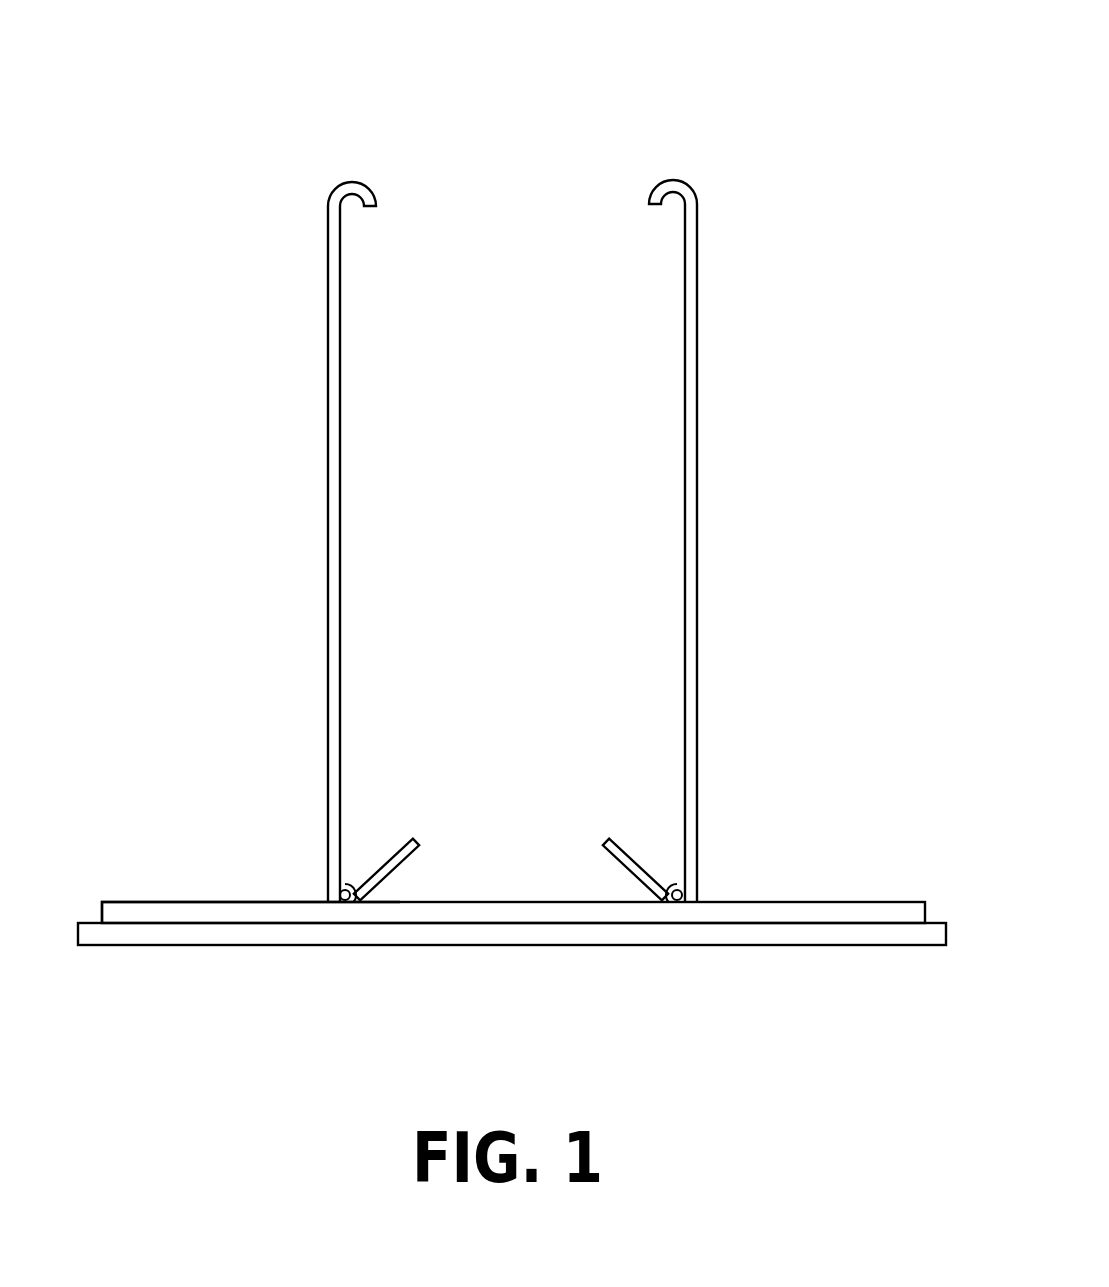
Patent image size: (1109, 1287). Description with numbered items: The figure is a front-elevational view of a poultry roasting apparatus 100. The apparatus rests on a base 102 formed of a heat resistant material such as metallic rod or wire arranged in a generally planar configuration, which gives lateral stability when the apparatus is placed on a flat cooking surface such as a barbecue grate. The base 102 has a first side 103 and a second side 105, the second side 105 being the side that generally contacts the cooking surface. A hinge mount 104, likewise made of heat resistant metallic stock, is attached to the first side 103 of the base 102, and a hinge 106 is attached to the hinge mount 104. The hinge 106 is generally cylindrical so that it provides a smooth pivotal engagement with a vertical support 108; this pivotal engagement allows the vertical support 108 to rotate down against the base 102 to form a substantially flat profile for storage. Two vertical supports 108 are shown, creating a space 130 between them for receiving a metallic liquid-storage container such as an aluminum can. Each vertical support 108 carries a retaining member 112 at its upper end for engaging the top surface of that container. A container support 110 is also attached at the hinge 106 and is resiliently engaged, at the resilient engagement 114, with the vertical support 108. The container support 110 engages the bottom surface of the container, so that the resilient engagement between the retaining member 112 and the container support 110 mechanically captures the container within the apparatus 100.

The poultry roasting apparatus 100 is at (709, 65).
The space 130 is at (450, 228).
The vertical support 108 is at (697, 812).
The retaining member 112 is at (665, 182).
The hinge 106 is at (347, 886).
The container support 110 is at (612, 842).
The resilient engagement 114 is at (672, 878).
The base 102 is at (937, 920).
The first side 103 is at (127, 902).
The hinge mount 104 is at (793, 902).
The second side 105 is at (92, 947).